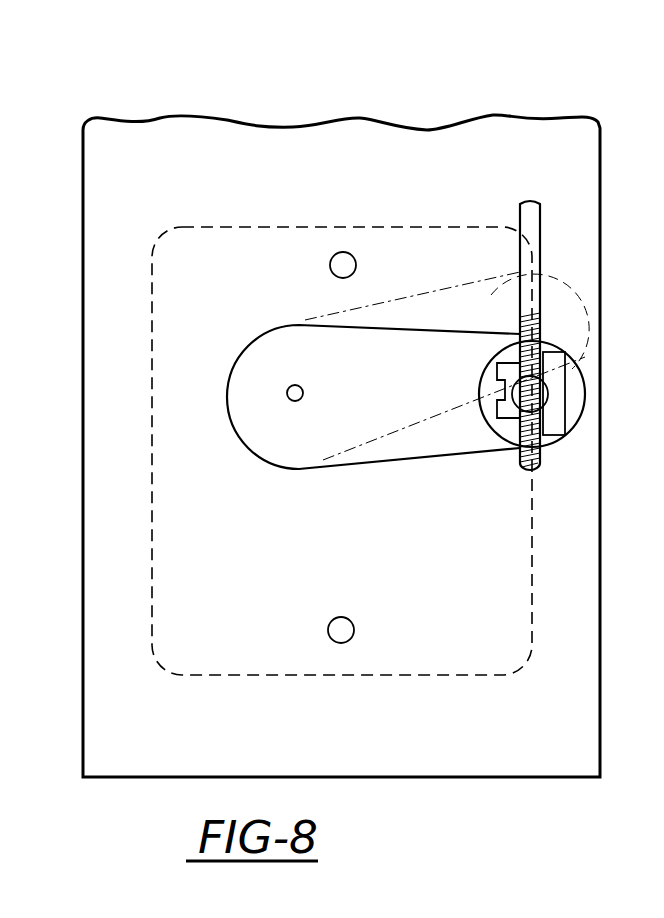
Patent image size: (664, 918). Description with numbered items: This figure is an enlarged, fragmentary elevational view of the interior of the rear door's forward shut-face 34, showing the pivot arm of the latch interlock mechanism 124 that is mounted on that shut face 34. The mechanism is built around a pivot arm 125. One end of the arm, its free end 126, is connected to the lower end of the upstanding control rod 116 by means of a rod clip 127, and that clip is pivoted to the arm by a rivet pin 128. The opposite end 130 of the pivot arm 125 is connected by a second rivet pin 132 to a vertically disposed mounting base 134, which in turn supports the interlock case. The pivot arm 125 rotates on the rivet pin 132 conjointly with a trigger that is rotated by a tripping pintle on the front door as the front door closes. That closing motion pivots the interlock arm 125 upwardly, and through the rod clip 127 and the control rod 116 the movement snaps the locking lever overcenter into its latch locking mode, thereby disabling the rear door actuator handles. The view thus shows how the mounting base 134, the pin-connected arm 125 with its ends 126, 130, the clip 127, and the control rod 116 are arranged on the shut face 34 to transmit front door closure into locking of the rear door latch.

The forward shut-face 34 is at (397, 140).
The control rod 116 is at (520, 212).
The latch interlock mechanism 124 is at (318, 220).
The pivot arm 125 is at (287, 312).
The free end 126 is at (565, 412).
The rod clip 127 is at (497, 384).
The rivet pin 128 is at (490, 423).
The opposite end 130 is at (240, 367).
The rivet pin 132 is at (288, 400).
The mounting base 134 is at (257, 240).